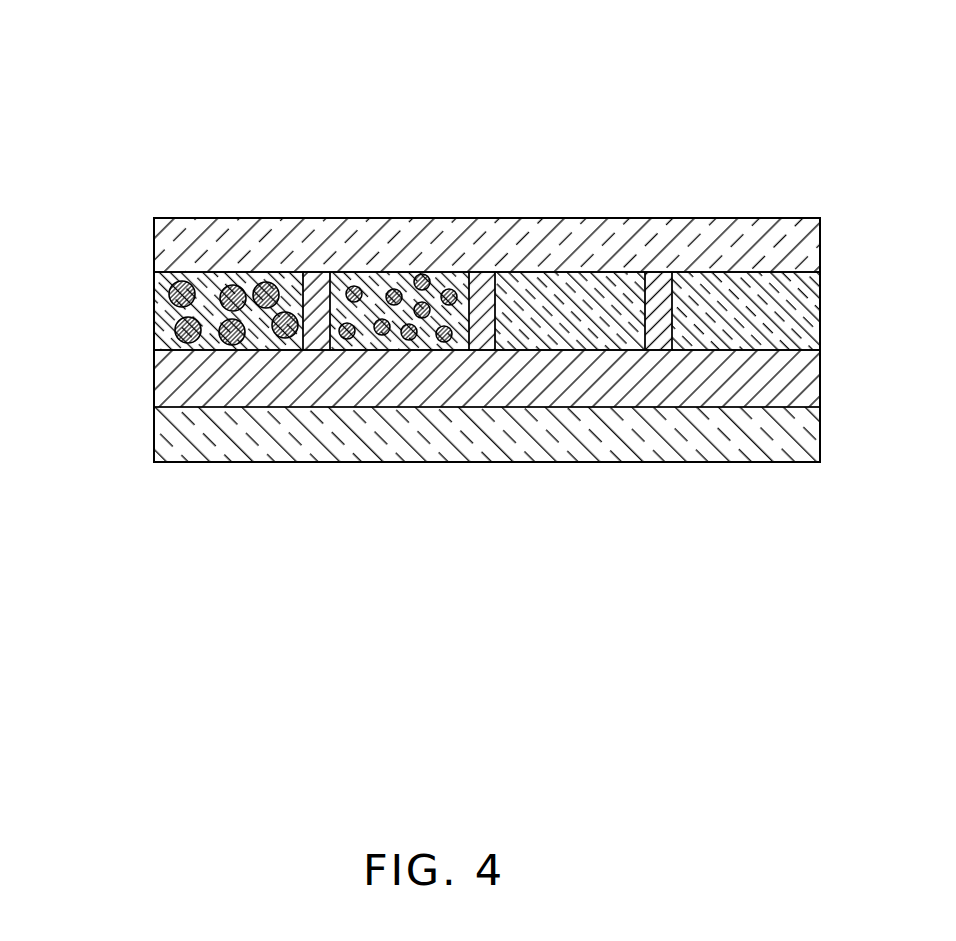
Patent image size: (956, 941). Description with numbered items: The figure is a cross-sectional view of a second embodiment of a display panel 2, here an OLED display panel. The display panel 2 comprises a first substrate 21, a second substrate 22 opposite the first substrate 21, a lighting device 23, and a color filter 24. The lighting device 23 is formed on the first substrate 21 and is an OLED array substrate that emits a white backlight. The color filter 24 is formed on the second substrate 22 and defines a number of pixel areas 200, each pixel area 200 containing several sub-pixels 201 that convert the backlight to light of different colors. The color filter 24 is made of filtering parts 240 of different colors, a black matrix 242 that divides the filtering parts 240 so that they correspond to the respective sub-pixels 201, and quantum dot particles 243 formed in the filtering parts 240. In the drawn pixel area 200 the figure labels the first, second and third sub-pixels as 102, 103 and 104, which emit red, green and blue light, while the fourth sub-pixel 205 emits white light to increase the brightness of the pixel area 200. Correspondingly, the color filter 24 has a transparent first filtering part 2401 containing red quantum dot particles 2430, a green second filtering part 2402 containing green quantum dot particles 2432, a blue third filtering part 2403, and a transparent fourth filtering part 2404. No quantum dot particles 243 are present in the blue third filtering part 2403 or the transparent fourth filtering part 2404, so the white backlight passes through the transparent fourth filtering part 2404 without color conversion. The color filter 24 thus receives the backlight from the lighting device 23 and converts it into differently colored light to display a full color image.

The display panel 2 is at (152, 46).
The pixel area 200 is at (202, 153).
The first sub-pixel region 102 is at (153, 210).
The second sub-pixel region 103 is at (317, 210).
The third sub-pixel region 104 is at (485, 210).
The fourth sub-pixel 205 is at (660, 210).
The second substrate 22 is at (172, 235).
The black matrix 242 is at (313, 288).
The color filter 24 is at (78, 238).
The filtering parts 240 is at (166, 292).
The quantum dot particles 243 is at (174, 328).
The transparent first filtering part 2401 is at (153, 340).
The lighting device 23 is at (170, 387).
The first substrate 21 is at (170, 431).
The red quantum dot particles 2430 is at (287, 338).
The green second filtering part 2402 is at (358, 335).
The green quantum dot particles 2432 is at (447, 341).
The blue third filtering part 2403 is at (562, 332).
The transparent fourth filtering part 2404 is at (723, 327).
The sub-pixels 201 is at (800, 312).